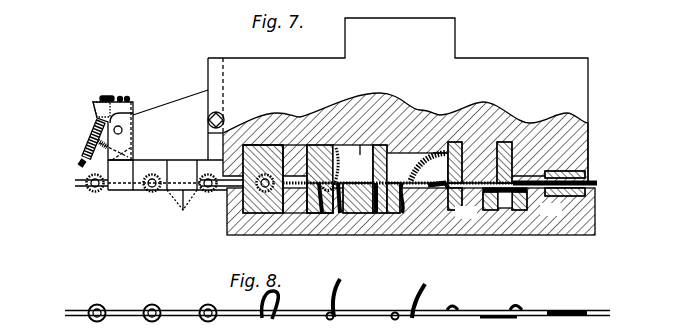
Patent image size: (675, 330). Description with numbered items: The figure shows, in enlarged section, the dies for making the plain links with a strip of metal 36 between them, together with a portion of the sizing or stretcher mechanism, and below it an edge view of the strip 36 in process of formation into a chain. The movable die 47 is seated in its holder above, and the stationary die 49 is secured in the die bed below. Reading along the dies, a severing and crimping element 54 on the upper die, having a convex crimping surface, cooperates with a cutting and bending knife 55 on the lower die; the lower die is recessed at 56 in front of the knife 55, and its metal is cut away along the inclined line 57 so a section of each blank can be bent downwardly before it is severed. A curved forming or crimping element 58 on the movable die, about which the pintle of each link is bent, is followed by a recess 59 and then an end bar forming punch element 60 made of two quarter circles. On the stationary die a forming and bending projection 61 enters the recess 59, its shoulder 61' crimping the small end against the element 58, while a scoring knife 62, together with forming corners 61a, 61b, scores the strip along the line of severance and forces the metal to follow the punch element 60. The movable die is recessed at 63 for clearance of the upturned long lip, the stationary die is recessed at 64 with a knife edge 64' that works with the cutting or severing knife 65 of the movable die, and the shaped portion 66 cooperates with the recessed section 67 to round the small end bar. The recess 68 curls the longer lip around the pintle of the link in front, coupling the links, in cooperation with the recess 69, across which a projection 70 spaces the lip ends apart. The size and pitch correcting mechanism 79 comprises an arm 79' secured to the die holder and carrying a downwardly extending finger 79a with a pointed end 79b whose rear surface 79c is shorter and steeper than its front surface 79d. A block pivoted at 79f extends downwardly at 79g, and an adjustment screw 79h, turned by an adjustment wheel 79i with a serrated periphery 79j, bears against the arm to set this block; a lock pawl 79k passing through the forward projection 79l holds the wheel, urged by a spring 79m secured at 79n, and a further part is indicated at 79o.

In FIG. 7, the strip of metal 36 is at (593, 182).
In FIG. 8, the strip of metal 36 is at (587, 310).
In FIG. 7, the movable die 47 is at (490, 76).
In FIG. 7, the stationary die 49 is at (555, 228).
In FIG. 7, the severing and crimping element 54 is at (515, 184).
In FIG. 7, the cutting and bending knife 55 is at (527, 193).
In FIG. 7, the recess 56 is at (508, 208).
In FIG. 7, the inclined line 57 is at (453, 183).
In FIG. 7, the curved forming or crimping element 58 is at (470, 180).
In FIG. 7, the recess 59 is at (437, 175).
In FIG. 7, the end bar forming punch element 60 is at (400, 150).
In FIG. 7, the forming and bending projection 61 is at (441, 220).
In FIG. 7, the shoulder 61' is at (467, 225).
In FIG. 7, the forming corner 61a is at (413, 214).
In FIG. 7, the forming corner 61b is at (375, 214).
In FIG. 7, the scoring knife 62 is at (402, 214).
In FIG. 7, the recess 63 is at (360, 145).
In FIG. 7, the recess 64 is at (340, 226).
In FIG. 7, the knife edge 64' is at (324, 216).
In FIG. 7, the cutting or severing knife 65 is at (328, 146).
In FIG. 7, the shaped portion of movable die 66 is at (302, 146).
In FIG. 7, the recessed section 67 is at (305, 214).
In FIG. 7, the recess 68 is at (262, 146).
In FIG. 7, the recess 69 is at (272, 214).
In FIG. 7, the projection 70 is at (246, 236).
In FIG. 7, the size and pitch correcting mechanism 79 is at (189, 107).
In FIG. 7, the arm 79' is at (170, 89).
In FIG. 7, the downwardly extending finger 79a is at (182, 168).
In FIG. 7, the pointed lower end 79b is at (190, 193).
In FIG. 7, the rear surface 79c is at (197, 191).
In FIG. 7, the front surface 79d is at (178, 195).
In FIG. 7, the pivot 79f is at (122, 130).
In FIG. 7, the downwardly extending portion of block 79g is at (120, 172).
In FIG. 7, the adjustment screw 79h is at (123, 155).
In FIG. 7, the adjustment wheel 79i is at (85, 140).
In FIG. 7, the toothed or serrated periphery 79j is at (83, 163).
In FIG. 7, the lock pawl 79k is at (102, 98).
In FIG. 7, the forward projection 79l is at (90, 108).
In FIG. 7, the spring 79m is at (105, 96).
In FIG. 7, the spring securing point 79n is at (124, 96).
In FIG. 7, the pivot pin 79o is at (133, 105).